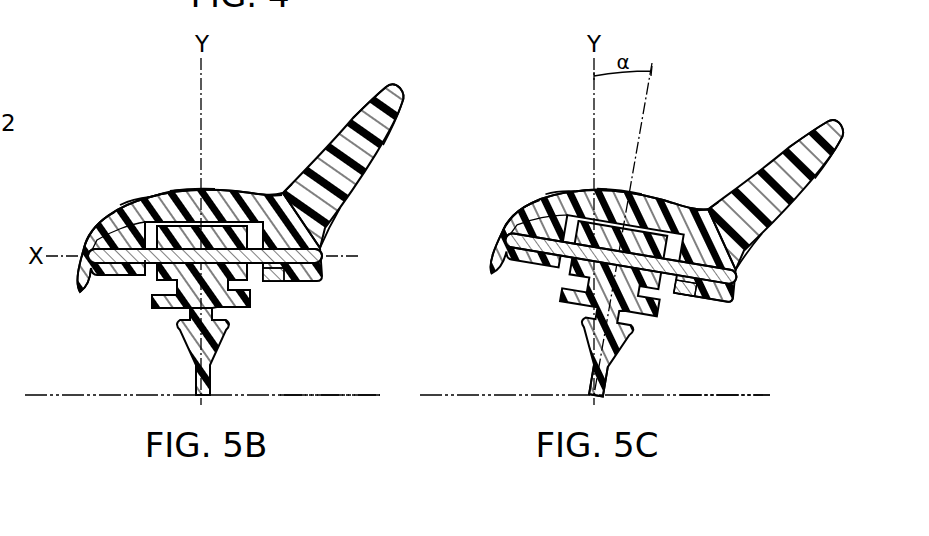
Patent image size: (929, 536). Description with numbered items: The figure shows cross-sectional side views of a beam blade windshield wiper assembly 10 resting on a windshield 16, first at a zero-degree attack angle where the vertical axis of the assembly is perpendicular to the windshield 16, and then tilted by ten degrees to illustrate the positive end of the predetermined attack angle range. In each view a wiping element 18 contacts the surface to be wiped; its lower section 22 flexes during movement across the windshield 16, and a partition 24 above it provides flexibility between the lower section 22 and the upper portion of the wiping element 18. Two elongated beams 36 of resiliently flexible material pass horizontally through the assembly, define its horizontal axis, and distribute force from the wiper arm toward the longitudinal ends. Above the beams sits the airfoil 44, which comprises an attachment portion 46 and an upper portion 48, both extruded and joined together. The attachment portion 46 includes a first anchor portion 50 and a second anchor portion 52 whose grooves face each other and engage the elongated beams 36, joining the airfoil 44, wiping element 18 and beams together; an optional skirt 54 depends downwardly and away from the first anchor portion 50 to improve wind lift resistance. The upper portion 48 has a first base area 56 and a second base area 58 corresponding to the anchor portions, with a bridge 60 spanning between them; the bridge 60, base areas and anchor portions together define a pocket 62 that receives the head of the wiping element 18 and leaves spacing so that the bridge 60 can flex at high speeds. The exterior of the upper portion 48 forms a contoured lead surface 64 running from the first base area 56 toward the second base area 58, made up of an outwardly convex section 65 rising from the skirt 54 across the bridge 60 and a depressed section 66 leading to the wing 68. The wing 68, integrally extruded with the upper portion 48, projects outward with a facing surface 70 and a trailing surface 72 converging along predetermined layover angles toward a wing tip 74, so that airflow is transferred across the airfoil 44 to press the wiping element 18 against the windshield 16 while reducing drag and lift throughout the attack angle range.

In FIG. 5B, the beam blade windshield wiper assembly 10 is at (138, 96).
In FIG. 5C, the beam blade windshield wiper assembly 10 is at (566, 96).
In FIG. 5B, the windshield 16 is at (310, 396).
In FIG. 5C, the windshield 16 is at (705, 396).
In FIG. 5B, the wiping element 18 is at (147, 349).
In FIG. 5C, the wiping element 18 is at (546, 338).
In FIG. 5B, the lower section 22 is at (229, 357).
In FIG. 5C, the lower section 22 is at (608, 311).
In FIG. 5B, the partition 24 is at (213, 315).
In FIG. 5B, the elongated beams 36 is at (148, 285).
In FIG. 5B, the airfoil 44 is at (135, 183).
In FIG. 5C, the airfoil 44 is at (550, 173).
In FIG. 5C, the attachment portion 46 is at (730, 305).
In FIG. 5C, the upper portion 48 is at (513, 195).
In FIG. 5B, the first anchor portion 50 is at (80, 292).
In FIG. 5C, the first anchor portion 50 is at (496, 232).
In FIG. 5B, the second anchor portion 52 is at (312, 278).
In FIG. 5C, the second anchor portion 52 is at (733, 278).
In FIG. 5B, the skirt 54 is at (76, 288).
In FIG. 5C, the skirt 54 is at (488, 268).
In FIG. 5B, the first base area 56 is at (96, 228).
In FIG. 5B, the second base area 58 is at (321, 243).
In FIG. 5C, the second base area 58 is at (750, 243).
In FIG. 5B, the bridge 60 is at (180, 188).
In FIG. 5B, the pocket 62 is at (143, 205).
In FIG. 5B, the contoured lead surface 64 is at (196, 183).
In FIG. 5C, the contoured lead surface 64 is at (608, 178).
In FIG. 5C, the outwardly convex section 65 is at (570, 185).
In FIG. 5B, the depressed section 66 is at (283, 193).
In FIG. 5C, the depressed section 66 is at (701, 204).
In FIG. 5B, the wing 68 is at (287, 157).
In FIG. 5C, the wing 68 is at (730, 165).
In FIG. 5B, the facing surface 70 is at (368, 110).
In FIG. 5C, the facing surface 70 is at (818, 130).
In FIG. 5B, the trailing surface 72 is at (384, 128).
In FIG. 5C, the trailing surface 72 is at (818, 164).
In FIG. 5B, the wing tip 74 is at (398, 84).
In FIG. 5C, the wing tip 74 is at (833, 118).